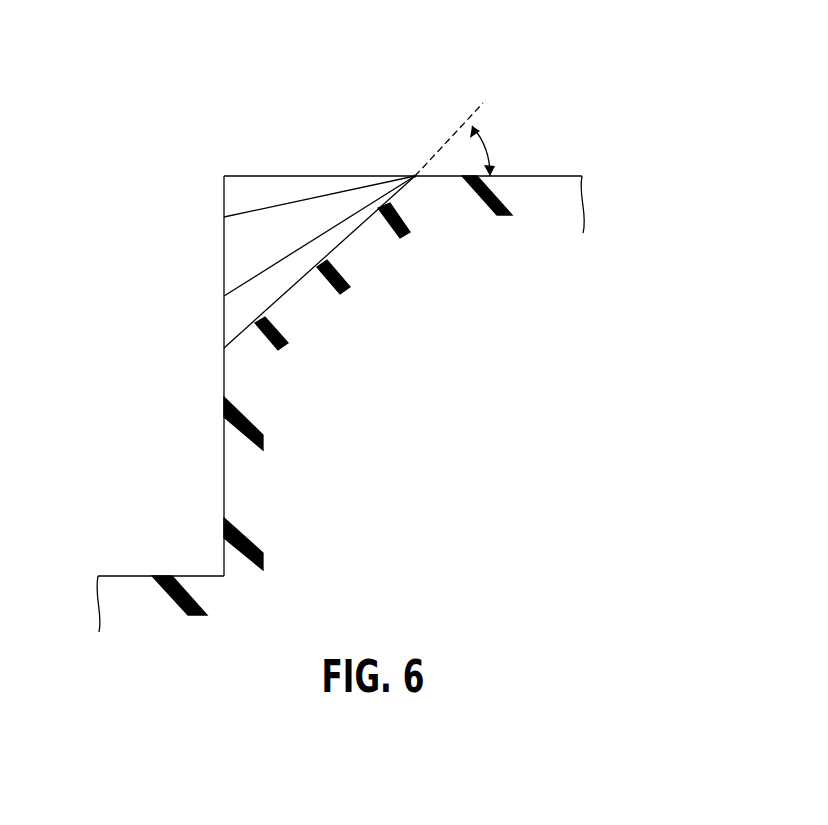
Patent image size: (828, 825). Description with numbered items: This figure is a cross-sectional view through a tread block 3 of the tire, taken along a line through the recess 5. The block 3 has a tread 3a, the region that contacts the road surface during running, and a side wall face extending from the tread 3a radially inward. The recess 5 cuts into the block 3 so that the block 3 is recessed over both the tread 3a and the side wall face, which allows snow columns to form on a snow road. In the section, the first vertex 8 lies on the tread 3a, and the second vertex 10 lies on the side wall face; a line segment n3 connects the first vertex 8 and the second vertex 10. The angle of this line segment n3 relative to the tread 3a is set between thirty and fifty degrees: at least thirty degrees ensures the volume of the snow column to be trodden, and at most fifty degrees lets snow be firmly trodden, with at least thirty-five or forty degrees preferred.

The block 3 is at (421, 423).
The tread 3a is at (552, 176).
The recess 5 is at (281, 171).
The first vertex 8 is at (414, 175).
The second vertex 10 is at (224, 349).
The line segment n3 is at (482, 103).